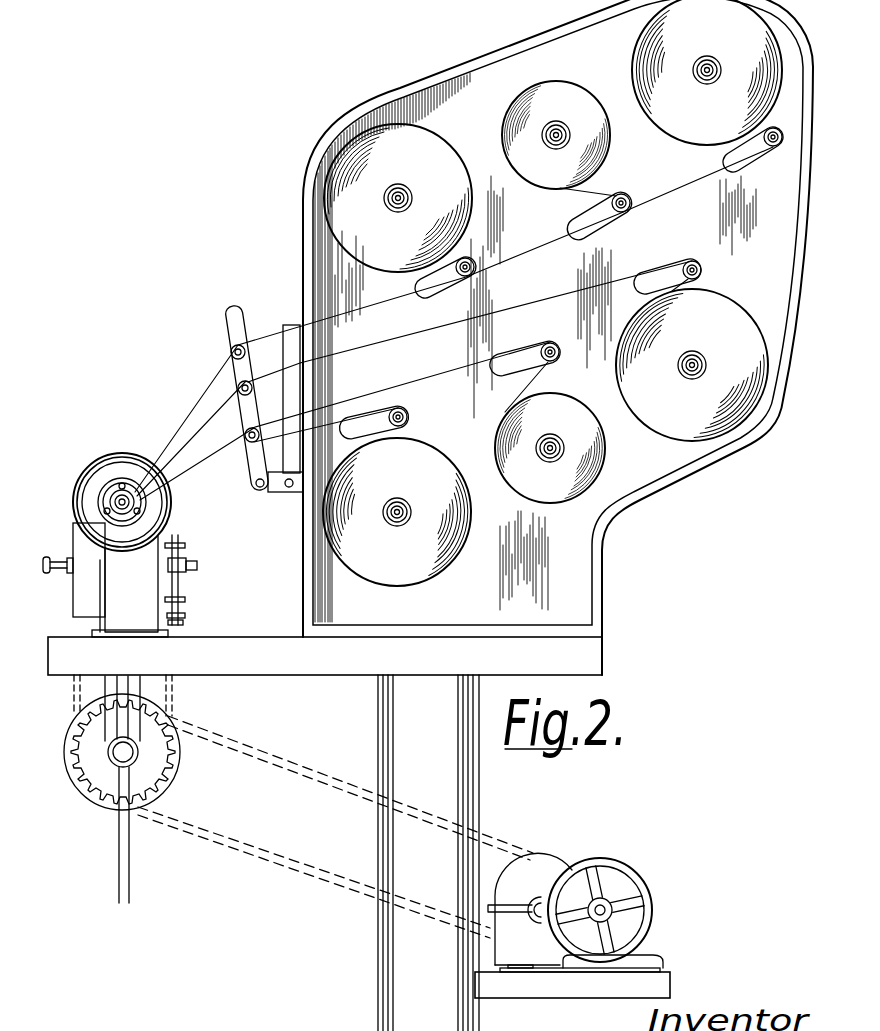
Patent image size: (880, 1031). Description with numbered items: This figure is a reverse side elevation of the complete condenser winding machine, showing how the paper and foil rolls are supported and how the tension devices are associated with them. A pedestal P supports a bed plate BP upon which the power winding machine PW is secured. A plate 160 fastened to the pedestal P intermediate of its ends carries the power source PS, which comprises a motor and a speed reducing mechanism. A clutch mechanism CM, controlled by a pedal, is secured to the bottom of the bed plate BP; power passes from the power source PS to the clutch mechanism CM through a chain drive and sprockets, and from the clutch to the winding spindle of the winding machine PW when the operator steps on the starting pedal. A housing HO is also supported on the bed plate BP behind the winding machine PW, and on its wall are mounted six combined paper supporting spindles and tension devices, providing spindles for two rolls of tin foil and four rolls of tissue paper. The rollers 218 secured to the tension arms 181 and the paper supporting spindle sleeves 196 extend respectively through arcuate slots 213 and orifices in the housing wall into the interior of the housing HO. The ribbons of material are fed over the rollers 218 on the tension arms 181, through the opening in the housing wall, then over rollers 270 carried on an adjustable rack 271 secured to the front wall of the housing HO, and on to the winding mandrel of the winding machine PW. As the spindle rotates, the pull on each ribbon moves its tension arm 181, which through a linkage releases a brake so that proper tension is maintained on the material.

The housing HO is at (502, 54).
The arcuate slots 213 is at (575, 229).
The rollers 218 is at (702, 270).
The tension arms 181 is at (562, 353).
The paper supporting spindle sleeves 196 is at (558, 452).
The rollers 270 is at (231, 347).
The adjustable rack 271 is at (247, 332).
The power winding machine PW is at (112, 457).
The bed plate BP is at (255, 640).
The clutch mechanism CM is at (170, 731).
The pedestal P is at (392, 728).
The power source PS is at (601, 868).
The plate 160 is at (672, 993).